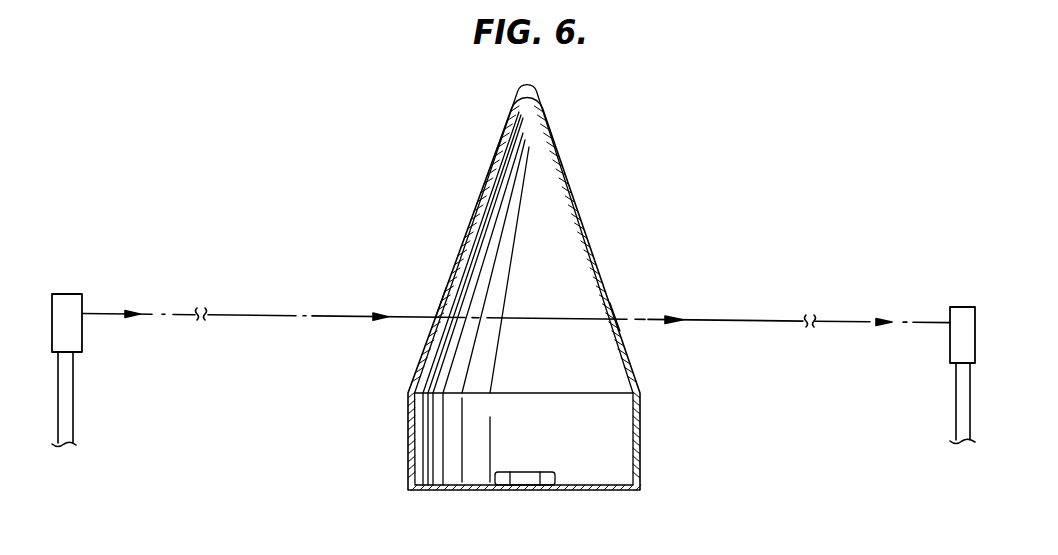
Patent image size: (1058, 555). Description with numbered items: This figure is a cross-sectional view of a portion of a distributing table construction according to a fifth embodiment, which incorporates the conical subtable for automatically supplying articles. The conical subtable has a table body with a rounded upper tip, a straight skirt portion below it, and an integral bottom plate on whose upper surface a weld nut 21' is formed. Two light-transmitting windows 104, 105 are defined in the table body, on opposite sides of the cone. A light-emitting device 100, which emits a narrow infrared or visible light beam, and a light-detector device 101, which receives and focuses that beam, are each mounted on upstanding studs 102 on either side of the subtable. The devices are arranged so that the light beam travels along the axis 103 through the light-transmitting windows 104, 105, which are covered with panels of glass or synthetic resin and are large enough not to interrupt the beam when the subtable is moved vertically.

The light-transmitting window 104 is at (441, 300).
The light-transmitting window 105 is at (614, 317).
The weld nut 21' is at (544, 456).
The light-emitting device 100 is at (74, 307).
The light-detector device 101 is at (950, 315).
The upstanding stud 102 is at (75, 397).
The axis of the light beam 103 is at (222, 313).